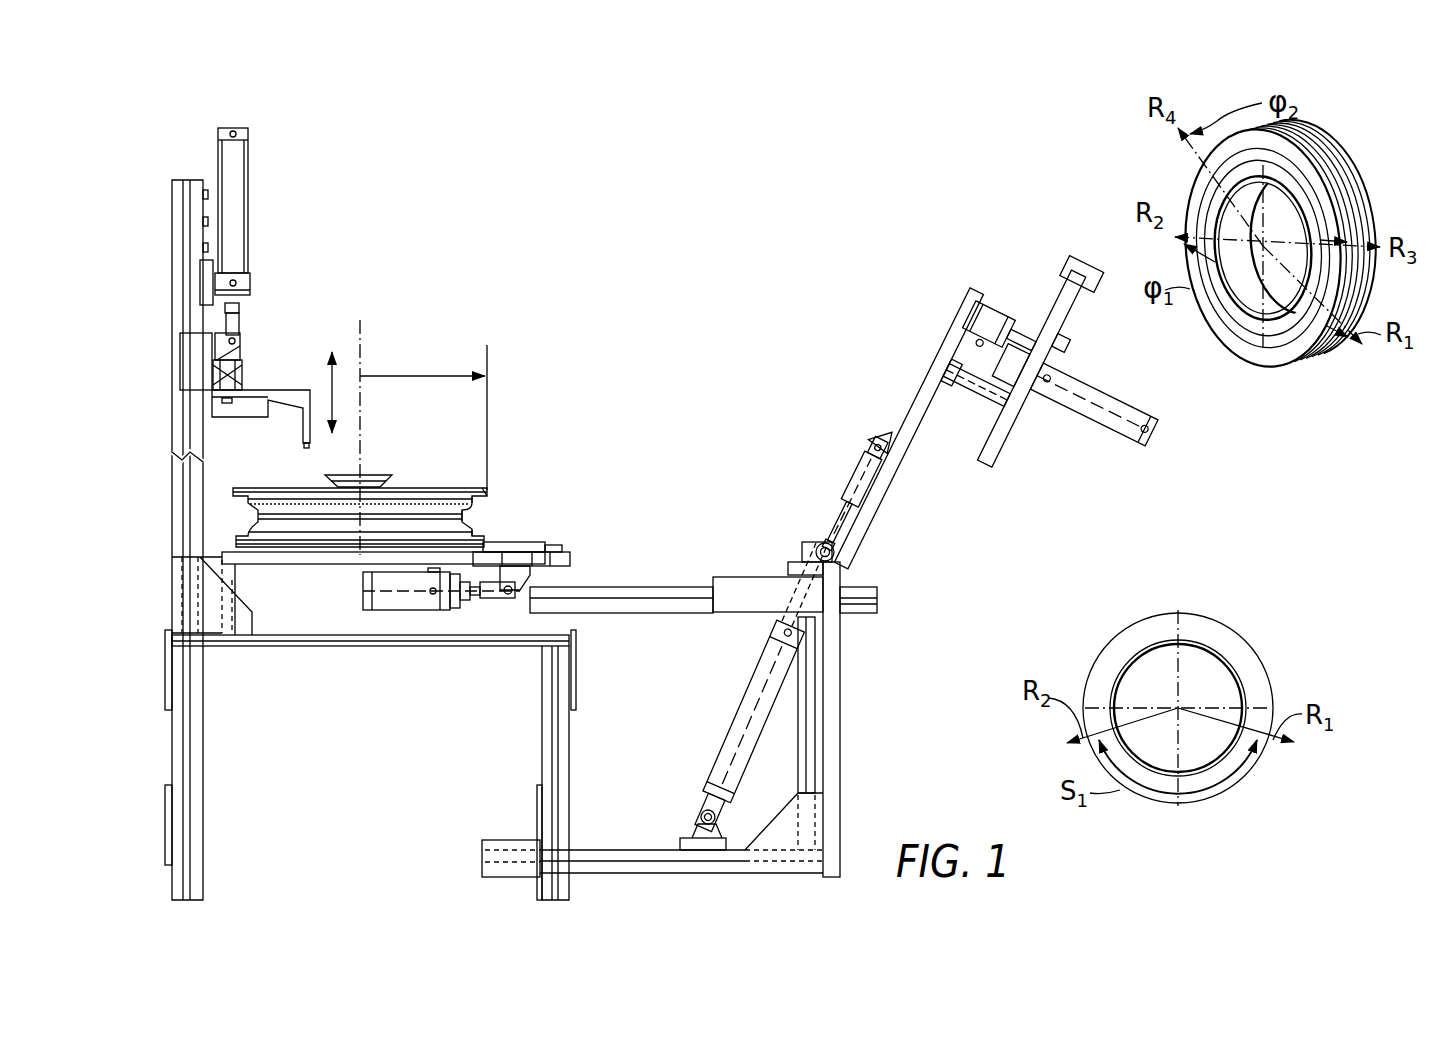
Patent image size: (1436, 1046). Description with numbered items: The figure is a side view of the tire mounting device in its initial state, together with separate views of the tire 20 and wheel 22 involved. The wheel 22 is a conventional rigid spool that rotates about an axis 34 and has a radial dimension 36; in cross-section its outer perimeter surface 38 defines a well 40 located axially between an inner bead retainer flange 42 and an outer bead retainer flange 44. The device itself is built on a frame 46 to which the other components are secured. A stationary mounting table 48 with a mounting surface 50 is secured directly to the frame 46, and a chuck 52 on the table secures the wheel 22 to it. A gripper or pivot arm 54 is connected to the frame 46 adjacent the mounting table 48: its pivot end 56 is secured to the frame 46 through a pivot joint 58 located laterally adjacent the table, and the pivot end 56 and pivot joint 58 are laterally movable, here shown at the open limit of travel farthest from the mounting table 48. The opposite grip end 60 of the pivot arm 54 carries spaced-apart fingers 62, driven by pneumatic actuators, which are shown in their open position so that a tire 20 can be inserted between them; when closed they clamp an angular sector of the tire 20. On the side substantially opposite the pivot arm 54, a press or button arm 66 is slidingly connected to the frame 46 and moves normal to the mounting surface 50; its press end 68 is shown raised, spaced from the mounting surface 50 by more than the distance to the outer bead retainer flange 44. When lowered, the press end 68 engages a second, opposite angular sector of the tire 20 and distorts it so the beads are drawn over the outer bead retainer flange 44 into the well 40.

The tire 20 is at (1196, 190).
The wheel 22 is at (412, 488).
The axis 34 is at (363, 418).
The radial dimension 36 is at (413, 375).
The outer perimeter surface 38 is at (493, 501).
The well 40 is at (490, 518).
The inner bead retainer wall or flange 42 is at (494, 530).
The outer bead retainer wall or flange 44 is at (490, 491).
The frame 46 is at (172, 520).
The mounting table 48 is at (268, 564).
The mounting surface 50 is at (236, 548).
The chuck 52 is at (370, 474).
The pivot arm 54 is at (930, 388).
The pivot end 56 is at (855, 552).
The pivot joint 58 is at (808, 552).
The grip end 60 is at (957, 329).
The fingers 62 is at (1062, 277).
The button arm 66 is at (253, 390).
The press end 68 is at (305, 448).